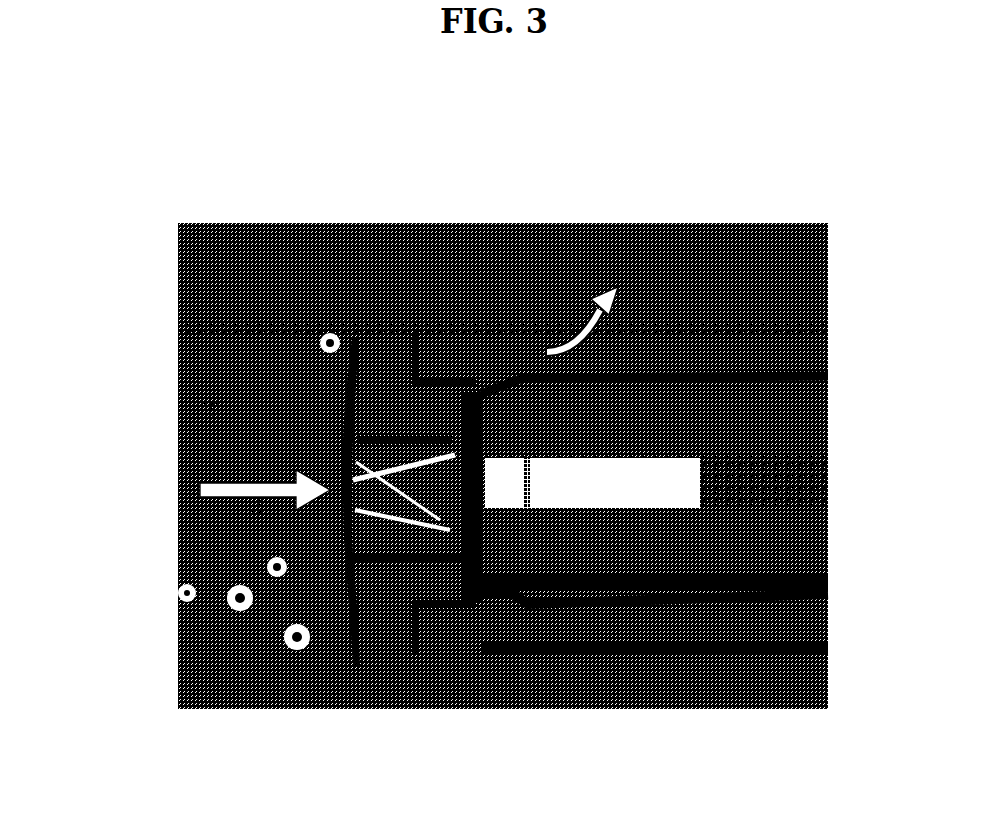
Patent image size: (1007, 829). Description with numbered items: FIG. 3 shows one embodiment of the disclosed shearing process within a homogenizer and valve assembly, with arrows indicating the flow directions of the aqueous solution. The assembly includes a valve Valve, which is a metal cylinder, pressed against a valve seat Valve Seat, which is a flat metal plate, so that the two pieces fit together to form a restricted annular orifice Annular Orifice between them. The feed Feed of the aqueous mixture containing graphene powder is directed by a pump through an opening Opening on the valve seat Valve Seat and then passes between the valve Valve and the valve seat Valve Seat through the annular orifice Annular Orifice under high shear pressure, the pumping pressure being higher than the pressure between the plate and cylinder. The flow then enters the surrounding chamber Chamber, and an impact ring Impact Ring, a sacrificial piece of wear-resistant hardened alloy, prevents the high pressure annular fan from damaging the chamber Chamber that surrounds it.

The valve seat Valve Seat is at (373, 362).
The impact ring Impact Ring is at (442, 345).
The chamber Chamber is at (684, 300).
The valve Valve is at (733, 469).
The feed Feed is at (184, 490).
The opening Opening is at (225, 568).
The annular orifice Annular Orifice is at (464, 605).